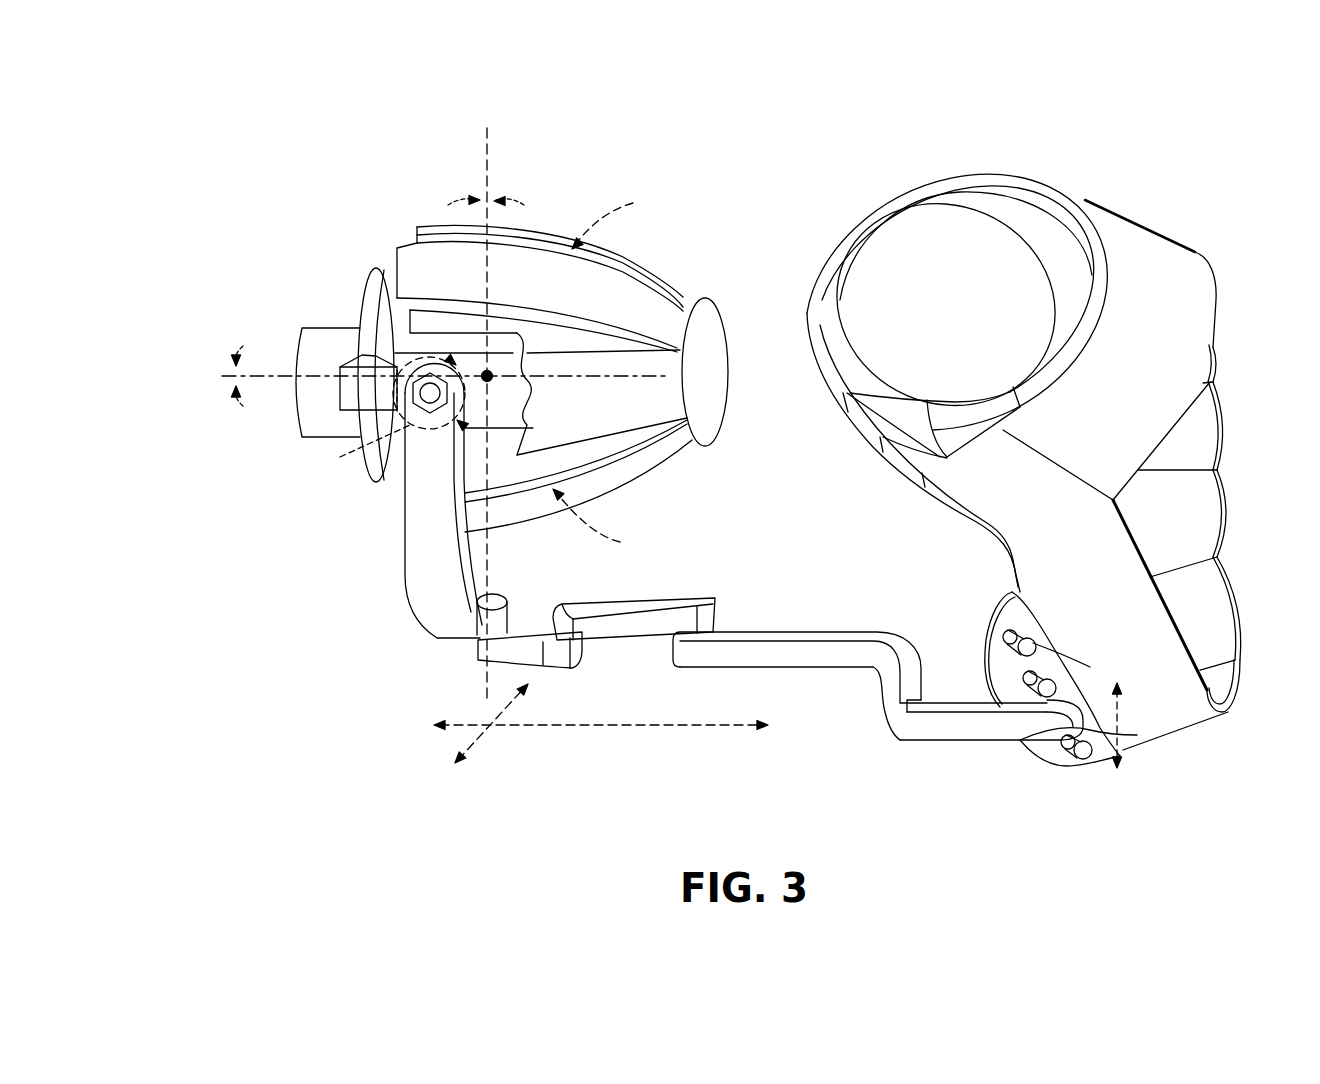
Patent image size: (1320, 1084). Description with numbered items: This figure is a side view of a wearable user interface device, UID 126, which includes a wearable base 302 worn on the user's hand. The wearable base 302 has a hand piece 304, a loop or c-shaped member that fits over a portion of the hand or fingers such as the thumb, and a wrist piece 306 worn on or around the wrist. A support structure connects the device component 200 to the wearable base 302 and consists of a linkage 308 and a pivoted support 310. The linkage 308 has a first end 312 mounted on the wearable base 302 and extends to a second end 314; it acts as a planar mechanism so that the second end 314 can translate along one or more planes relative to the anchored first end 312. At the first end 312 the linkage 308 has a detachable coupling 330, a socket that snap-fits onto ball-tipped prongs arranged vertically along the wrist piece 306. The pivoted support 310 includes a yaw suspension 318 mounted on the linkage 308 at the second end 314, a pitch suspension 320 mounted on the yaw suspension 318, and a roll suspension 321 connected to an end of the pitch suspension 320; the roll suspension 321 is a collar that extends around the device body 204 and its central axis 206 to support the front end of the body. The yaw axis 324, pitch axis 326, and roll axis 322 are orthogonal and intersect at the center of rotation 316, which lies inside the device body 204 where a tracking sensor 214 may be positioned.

The UID 126 is at (1208, 192).
The device component 200 is at (573, 373).
The device body 204 is at (561, 367).
The central axis 206 is at (404, 361).
The tracking sensor 214 is at (718, 535).
The wearable base 302 is at (1055, 461).
The hand piece 304 is at (992, 147).
The wrist piece 306 is at (1094, 692).
The linkage 308 is at (837, 667).
The pivoted support 310 is at (434, 531).
The first end 312 is at (1183, 756).
The second end 314 is at (443, 597).
The center of rotation 316 is at (489, 372).
The yaw suspension 318 is at (364, 610).
The pitch suspension 320 is at (357, 397).
The roll suspension 321 is at (370, 290).
The roll axis 322 is at (225, 377).
The yaw axis 324 is at (488, 168).
The pitch axis 326 is at (334, 455).
The detachable coupling 330 is at (1120, 770).